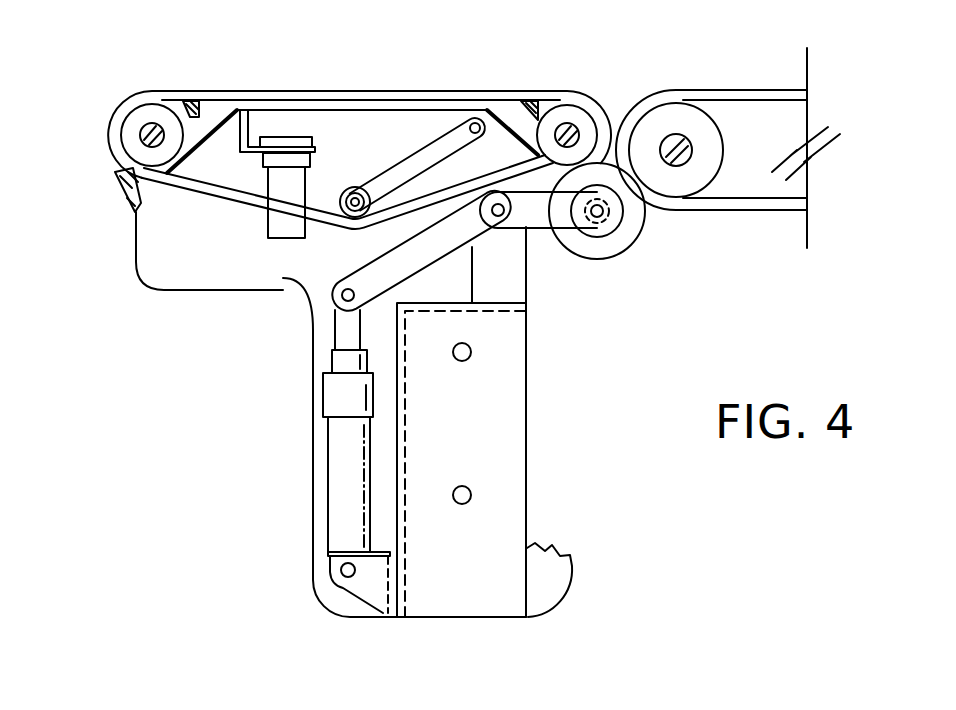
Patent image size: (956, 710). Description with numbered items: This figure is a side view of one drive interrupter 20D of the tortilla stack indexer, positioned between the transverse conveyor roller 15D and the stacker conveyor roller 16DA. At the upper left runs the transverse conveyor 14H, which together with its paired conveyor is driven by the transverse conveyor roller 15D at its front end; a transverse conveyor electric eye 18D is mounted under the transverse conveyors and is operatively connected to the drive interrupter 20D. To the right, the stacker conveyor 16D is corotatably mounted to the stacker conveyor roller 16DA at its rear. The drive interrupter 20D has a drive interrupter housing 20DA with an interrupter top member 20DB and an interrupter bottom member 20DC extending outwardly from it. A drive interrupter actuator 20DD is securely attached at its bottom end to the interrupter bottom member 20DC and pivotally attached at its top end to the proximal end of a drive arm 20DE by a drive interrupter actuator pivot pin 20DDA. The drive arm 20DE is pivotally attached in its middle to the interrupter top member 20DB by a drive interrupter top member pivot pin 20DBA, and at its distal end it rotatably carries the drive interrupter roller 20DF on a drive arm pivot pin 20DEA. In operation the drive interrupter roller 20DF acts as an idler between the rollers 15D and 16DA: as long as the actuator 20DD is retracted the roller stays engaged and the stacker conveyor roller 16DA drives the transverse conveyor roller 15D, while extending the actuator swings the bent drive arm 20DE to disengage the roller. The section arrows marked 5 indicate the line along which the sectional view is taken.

The section line 5- 5 is at (533, 250).
The transverse conveyor 14H is at (465, 90).
The transverse conveyor roller 15D is at (573, 115).
The stacker conveyor 16D is at (763, 88).
The stacker conveyor roller 16DA is at (655, 112).
The transverse conveyor electric eye 18D is at (283, 185).
The drive interrupter 20D is at (388, 42).
The drive interrupter housing 20DA is at (503, 450).
The interrupter top member 20DB is at (512, 283).
The drive interrupter top member pivot pin 20DBA is at (510, 240).
The interrupter bottom member 20DC is at (373, 592).
The drive interrupter actuator 20DD is at (340, 495).
The drive interrupter actuator pivot pin 20DDA is at (313, 327).
The drive arm 20DE is at (337, 277).
The drive arm pivot pin 20DEA is at (603, 217).
The drive interrupter roller 20DF is at (625, 189).